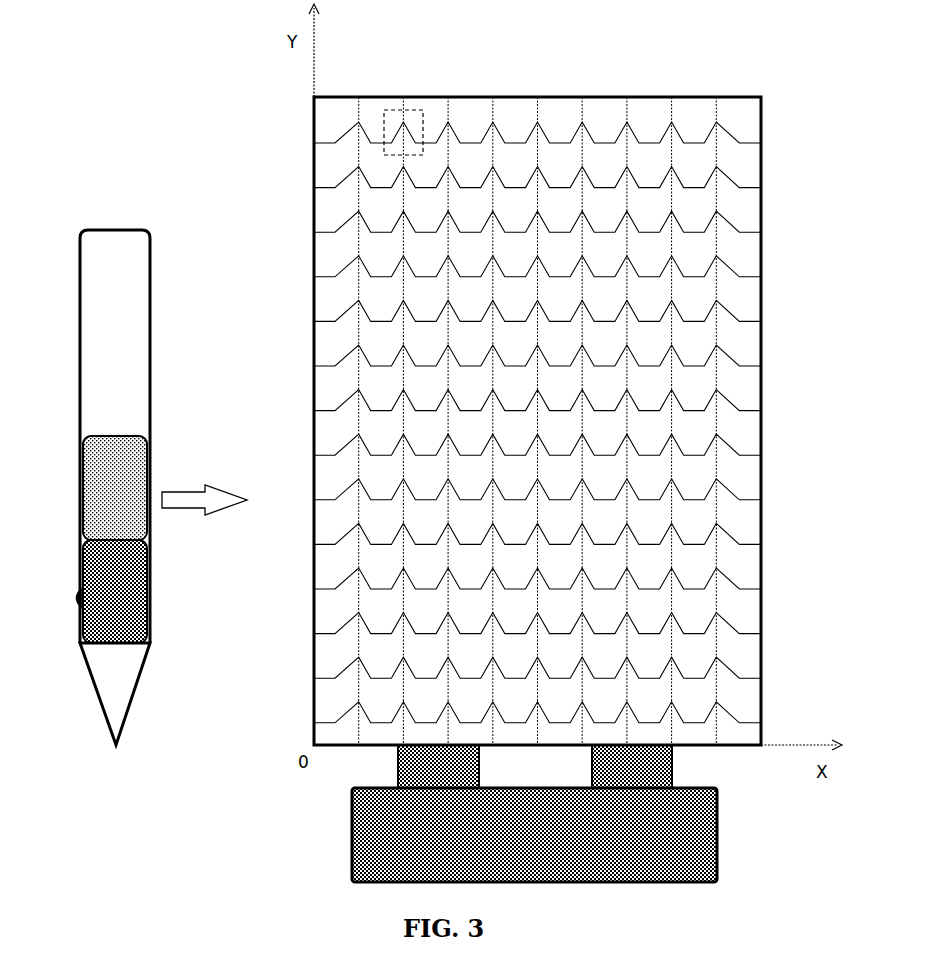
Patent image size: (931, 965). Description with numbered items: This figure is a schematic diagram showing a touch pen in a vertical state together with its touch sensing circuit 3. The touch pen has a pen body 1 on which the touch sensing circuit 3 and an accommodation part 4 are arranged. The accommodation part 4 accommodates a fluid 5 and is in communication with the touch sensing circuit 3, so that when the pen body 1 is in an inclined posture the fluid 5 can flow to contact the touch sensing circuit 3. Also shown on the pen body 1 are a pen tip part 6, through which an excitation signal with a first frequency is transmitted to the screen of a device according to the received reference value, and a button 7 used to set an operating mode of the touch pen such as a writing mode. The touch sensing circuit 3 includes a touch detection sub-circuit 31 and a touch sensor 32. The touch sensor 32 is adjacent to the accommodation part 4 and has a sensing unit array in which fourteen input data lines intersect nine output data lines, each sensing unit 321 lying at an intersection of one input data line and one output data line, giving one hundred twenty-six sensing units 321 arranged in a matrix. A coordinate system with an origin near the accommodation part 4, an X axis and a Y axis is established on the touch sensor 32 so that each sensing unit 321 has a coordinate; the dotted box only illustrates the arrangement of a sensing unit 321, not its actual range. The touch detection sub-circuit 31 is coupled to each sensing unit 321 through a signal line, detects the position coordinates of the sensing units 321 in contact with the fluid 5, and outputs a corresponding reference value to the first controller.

The pen body 1 is at (152, 325).
The touch sensing circuit 3 is at (106, 434).
The accommodation part 4 is at (82, 565).
The fluid 5 is at (88, 583).
The button 7 is at (76, 600).
The pen tip part 6 is at (94, 690).
The touch sensor 32 is at (763, 345).
The sensing unit 321 is at (383, 128).
The touch detection sub-circuit 31 is at (717, 835).